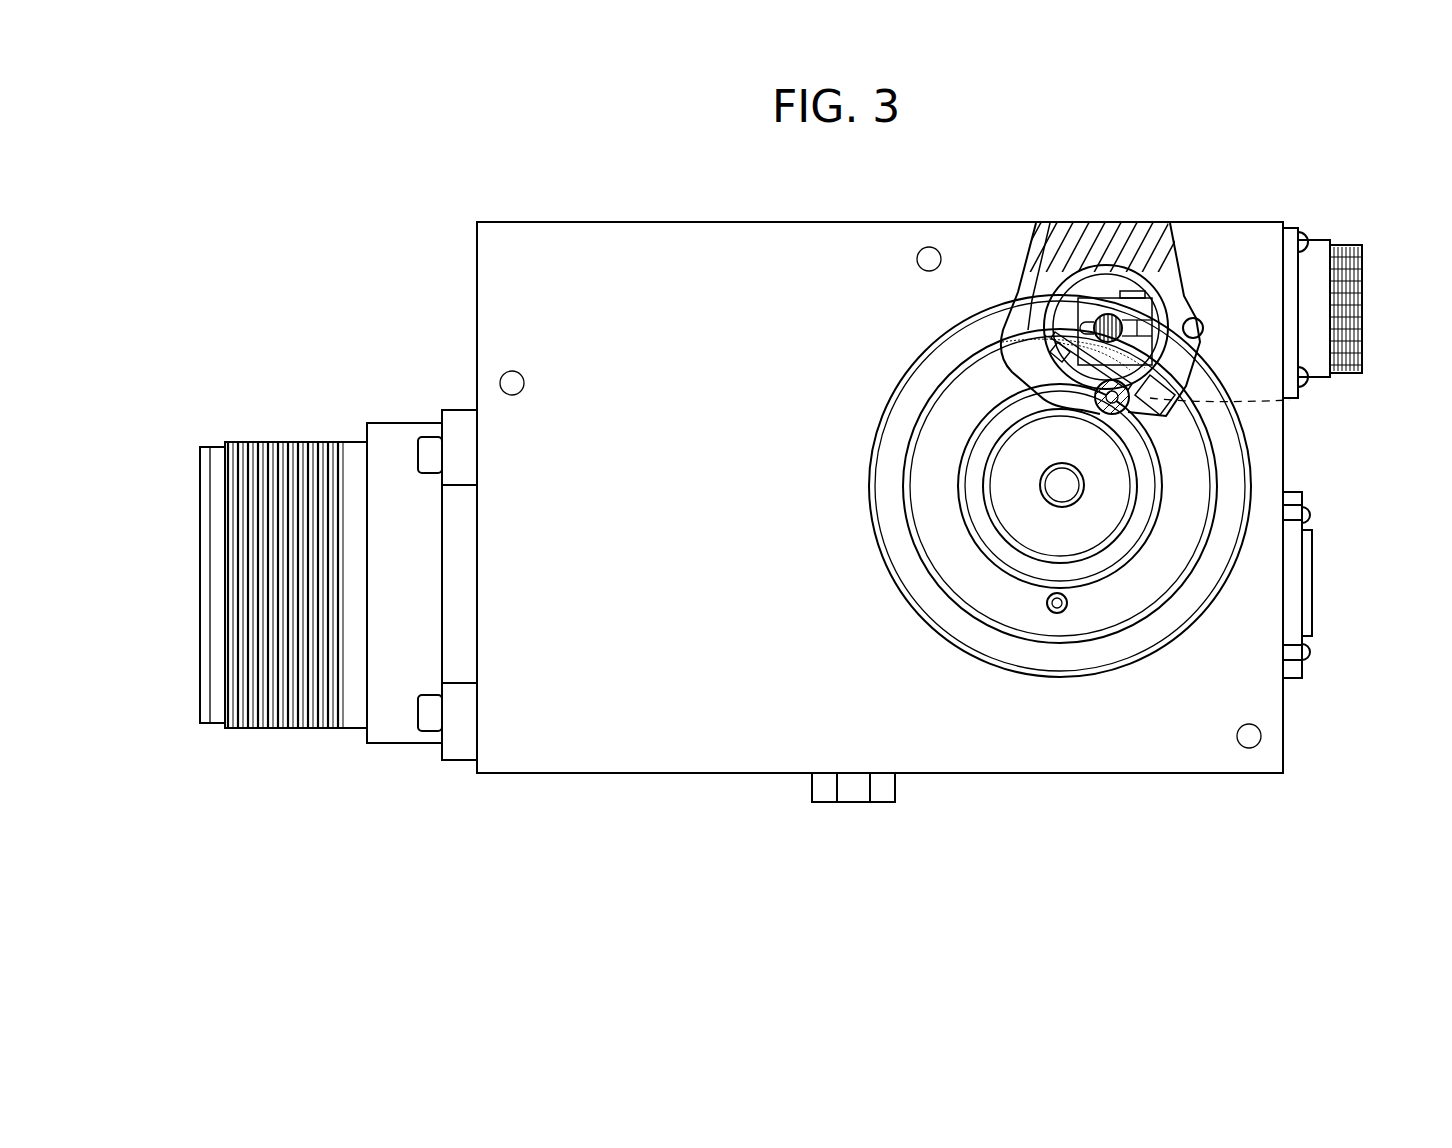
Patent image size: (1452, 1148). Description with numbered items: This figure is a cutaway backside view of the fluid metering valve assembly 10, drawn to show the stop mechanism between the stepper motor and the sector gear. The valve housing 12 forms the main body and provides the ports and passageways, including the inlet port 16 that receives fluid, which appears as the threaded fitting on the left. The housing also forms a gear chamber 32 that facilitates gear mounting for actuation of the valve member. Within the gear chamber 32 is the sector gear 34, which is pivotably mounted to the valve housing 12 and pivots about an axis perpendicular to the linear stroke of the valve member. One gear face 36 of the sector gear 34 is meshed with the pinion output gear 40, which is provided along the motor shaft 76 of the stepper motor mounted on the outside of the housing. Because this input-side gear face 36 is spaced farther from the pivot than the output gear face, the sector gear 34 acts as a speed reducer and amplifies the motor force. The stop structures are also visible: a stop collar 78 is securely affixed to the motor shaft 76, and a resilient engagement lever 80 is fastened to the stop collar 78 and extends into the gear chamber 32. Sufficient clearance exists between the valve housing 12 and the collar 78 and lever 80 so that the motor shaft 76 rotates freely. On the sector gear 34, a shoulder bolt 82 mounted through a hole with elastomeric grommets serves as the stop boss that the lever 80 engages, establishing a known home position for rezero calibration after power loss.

The fluid metering valve assembly 10 is at (556, 158).
The valve housing 12 is at (567, 755).
The inlet port 16 is at (200, 683).
The gear chamber 32 is at (1022, 282).
The sector gear 34 is at (1140, 410).
The gear face 36 is at (1290, 400).
The pinion output gear 40 is at (1155, 300).
The motor shaft 76 is at (1102, 316).
The stop collar 78 is at (1190, 290).
The resilient engagement lever 80 is at (1010, 402).
The shoulder bolt 82 is at (1125, 420).